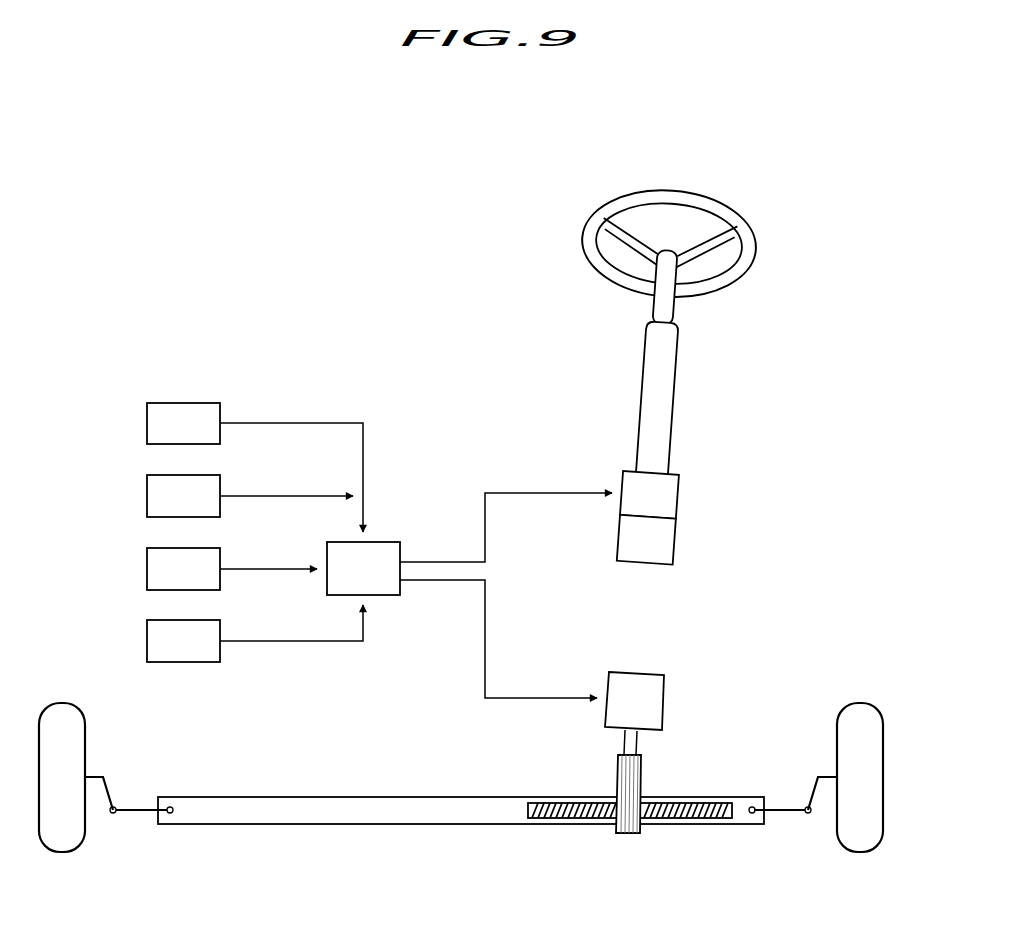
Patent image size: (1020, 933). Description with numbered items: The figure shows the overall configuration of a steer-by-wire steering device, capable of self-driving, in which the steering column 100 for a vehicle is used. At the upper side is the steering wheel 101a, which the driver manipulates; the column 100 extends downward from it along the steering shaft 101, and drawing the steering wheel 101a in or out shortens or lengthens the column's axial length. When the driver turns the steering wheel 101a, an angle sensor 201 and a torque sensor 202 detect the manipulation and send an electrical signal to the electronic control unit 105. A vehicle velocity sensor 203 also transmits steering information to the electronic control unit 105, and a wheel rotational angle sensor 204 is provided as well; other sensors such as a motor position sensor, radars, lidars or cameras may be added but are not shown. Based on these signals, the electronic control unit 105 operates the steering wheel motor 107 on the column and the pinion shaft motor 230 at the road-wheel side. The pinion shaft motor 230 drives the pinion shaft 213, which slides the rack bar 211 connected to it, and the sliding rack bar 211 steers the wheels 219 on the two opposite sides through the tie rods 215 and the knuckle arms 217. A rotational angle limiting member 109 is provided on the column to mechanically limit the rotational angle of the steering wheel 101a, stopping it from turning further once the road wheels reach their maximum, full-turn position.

The steering column 100 is at (660, 349).
The steering shaft 101 is at (656, 266).
The steering wheel 101a is at (667, 192).
The electronic control unit 105 is at (386, 540).
The steering wheel motor 107 is at (667, 497).
The rotational angle limiting member 109 is at (667, 538).
The angle sensor 201 is at (147, 424).
The torque sensor 202 is at (147, 496).
The vehicle velocity sensor 203 is at (147, 569).
The wheel rotational angle sensor 204 is at (147, 641).
The rack bar 211 is at (373, 826).
The pinion shaft 213 is at (636, 768).
The tie rod 215 is at (128, 813).
The knuckle arm 217 is at (110, 792).
The wheel 219 is at (80, 731).
The pinion shaft motor 230 is at (653, 700).